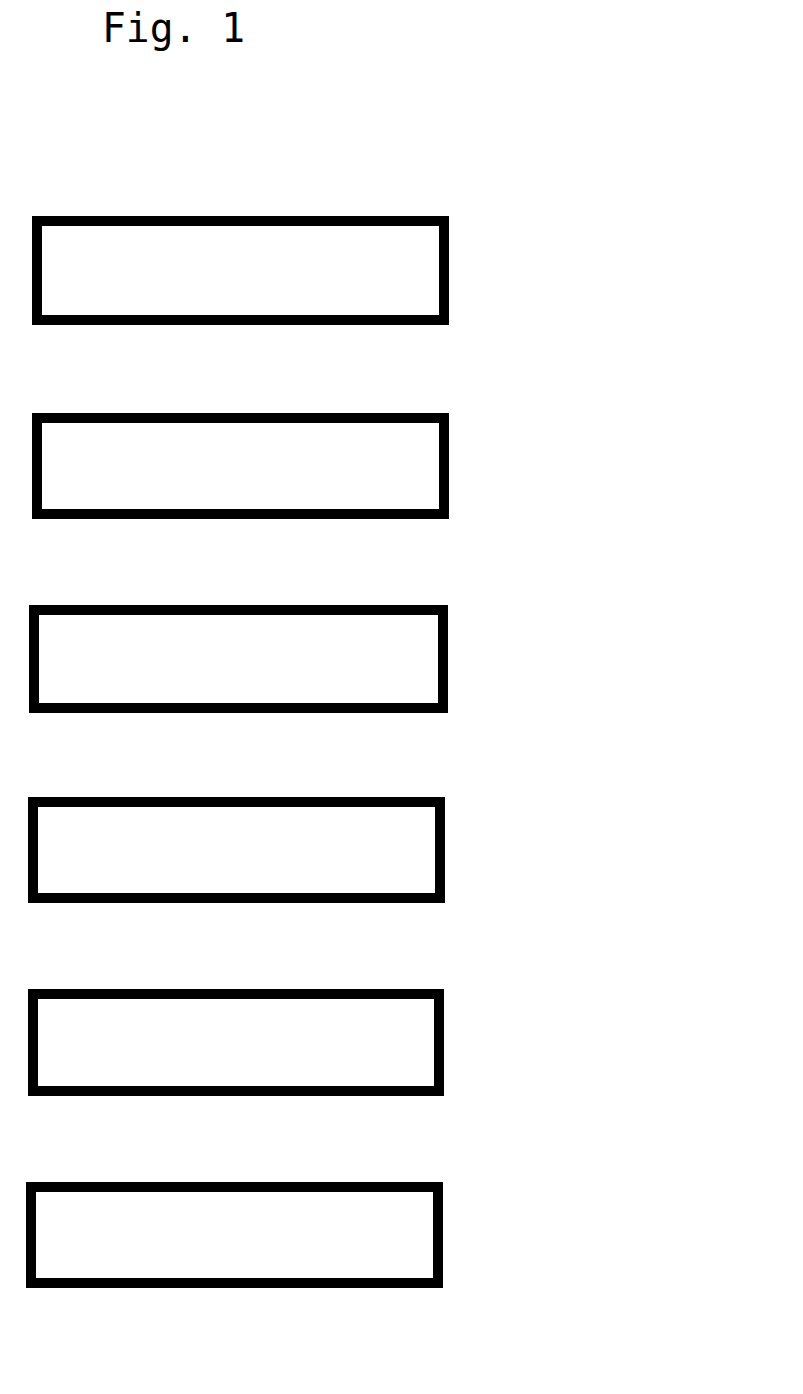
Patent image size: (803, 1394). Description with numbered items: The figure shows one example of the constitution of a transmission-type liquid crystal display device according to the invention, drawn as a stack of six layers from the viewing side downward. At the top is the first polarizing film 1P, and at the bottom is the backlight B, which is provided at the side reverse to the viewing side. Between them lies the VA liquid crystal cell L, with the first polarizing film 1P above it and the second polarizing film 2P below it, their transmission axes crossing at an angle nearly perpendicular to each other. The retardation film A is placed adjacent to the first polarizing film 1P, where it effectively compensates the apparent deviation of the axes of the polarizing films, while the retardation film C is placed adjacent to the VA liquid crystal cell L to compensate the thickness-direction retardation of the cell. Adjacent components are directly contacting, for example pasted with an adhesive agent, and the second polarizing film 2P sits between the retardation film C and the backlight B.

The first polarizing film 1P is at (364, 270).
The retardation film A is at (341, 465).
The VA liquid crystal cell L is at (336, 651).
The retardation film C is at (338, 834).
The second polarizing film 2P is at (359, 1042).
The backlight B is at (336, 1235).